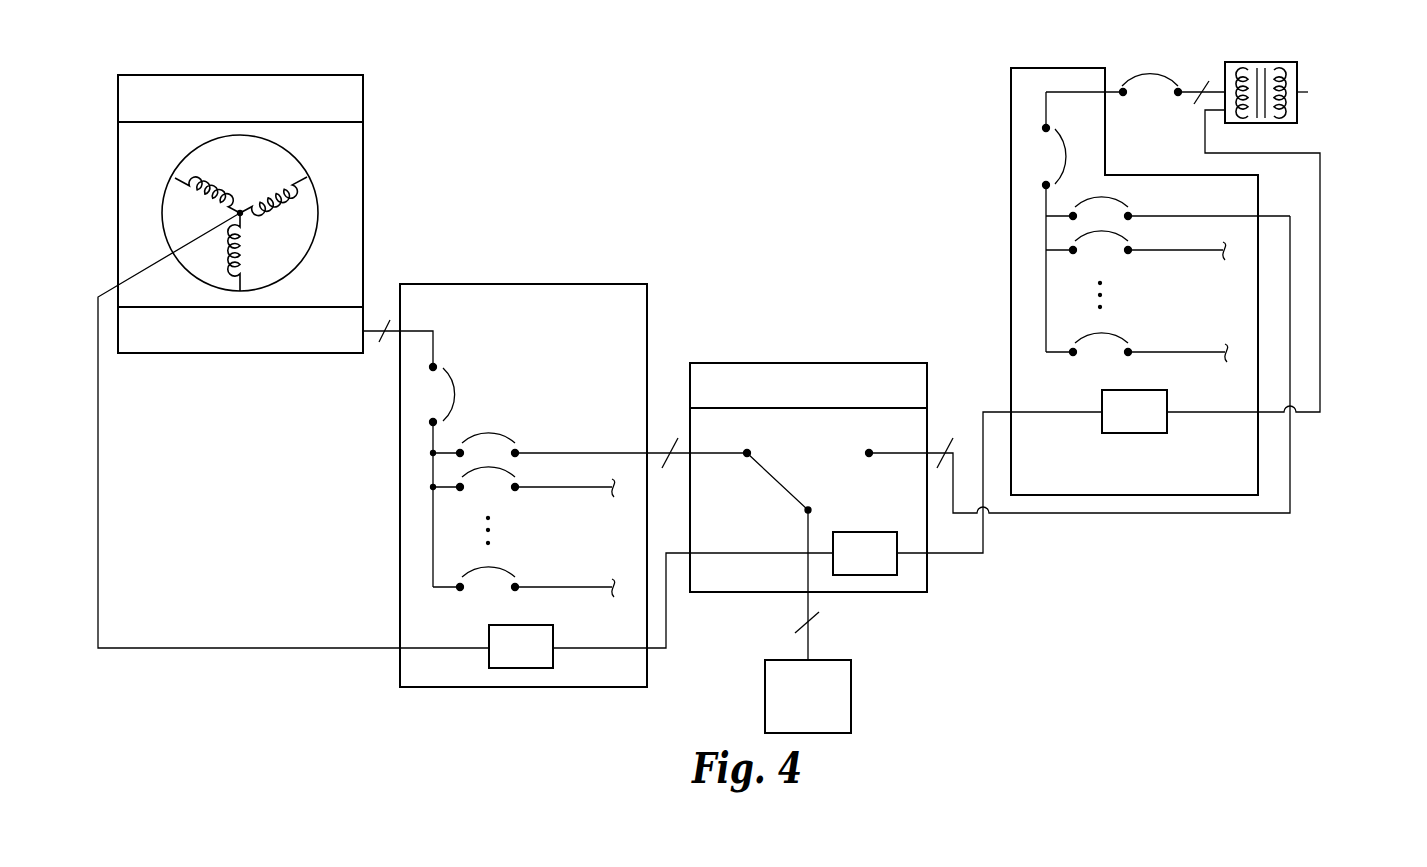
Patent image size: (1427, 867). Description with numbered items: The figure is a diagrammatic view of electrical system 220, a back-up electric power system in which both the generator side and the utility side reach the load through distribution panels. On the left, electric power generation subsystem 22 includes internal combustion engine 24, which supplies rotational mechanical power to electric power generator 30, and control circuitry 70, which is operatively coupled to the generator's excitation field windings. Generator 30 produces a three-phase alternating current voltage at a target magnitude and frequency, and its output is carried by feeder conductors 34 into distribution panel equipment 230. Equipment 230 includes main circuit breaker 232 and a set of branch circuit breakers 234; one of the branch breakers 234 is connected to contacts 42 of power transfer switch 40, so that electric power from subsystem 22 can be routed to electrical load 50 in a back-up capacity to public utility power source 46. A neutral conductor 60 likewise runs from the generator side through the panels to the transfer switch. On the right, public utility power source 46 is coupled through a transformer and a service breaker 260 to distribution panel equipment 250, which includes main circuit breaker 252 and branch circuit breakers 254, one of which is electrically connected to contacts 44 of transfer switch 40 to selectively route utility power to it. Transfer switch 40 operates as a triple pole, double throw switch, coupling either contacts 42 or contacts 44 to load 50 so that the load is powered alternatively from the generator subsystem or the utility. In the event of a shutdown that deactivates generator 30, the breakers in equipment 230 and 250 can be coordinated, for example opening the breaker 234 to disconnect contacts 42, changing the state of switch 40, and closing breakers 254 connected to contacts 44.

The electric power generation subsystem 22 is at (388, 53).
The internal combustion engine 24 is at (363, 98).
The electric power generator 30 is at (387, 178).
The feeder conductors 34 is at (371, 340).
The power transfer switch 40 is at (927, 380).
The contacts 42 is at (748, 449).
The contacts 44 is at (868, 449).
The public utility power source 46 is at (1255, 62).
The electrical load 50 is at (851, 686).
The neutral conductor 60 is at (298, 374).
The control circuitry 70 is at (173, 353).
The electrical system 220 is at (1320, 42).
The distribution panel equipment 230 is at (557, 283).
The main circuit breaker 232 is at (456, 393).
The branch circuit breakers 234 is at (510, 436).
The distribution panel equipment 250 is at (1011, 160).
The main circuit breaker 252 is at (1068, 143).
The branch circuit breakers 254 is at (1115, 194).
The utility service circuit breaker 260 is at (1152, 68).